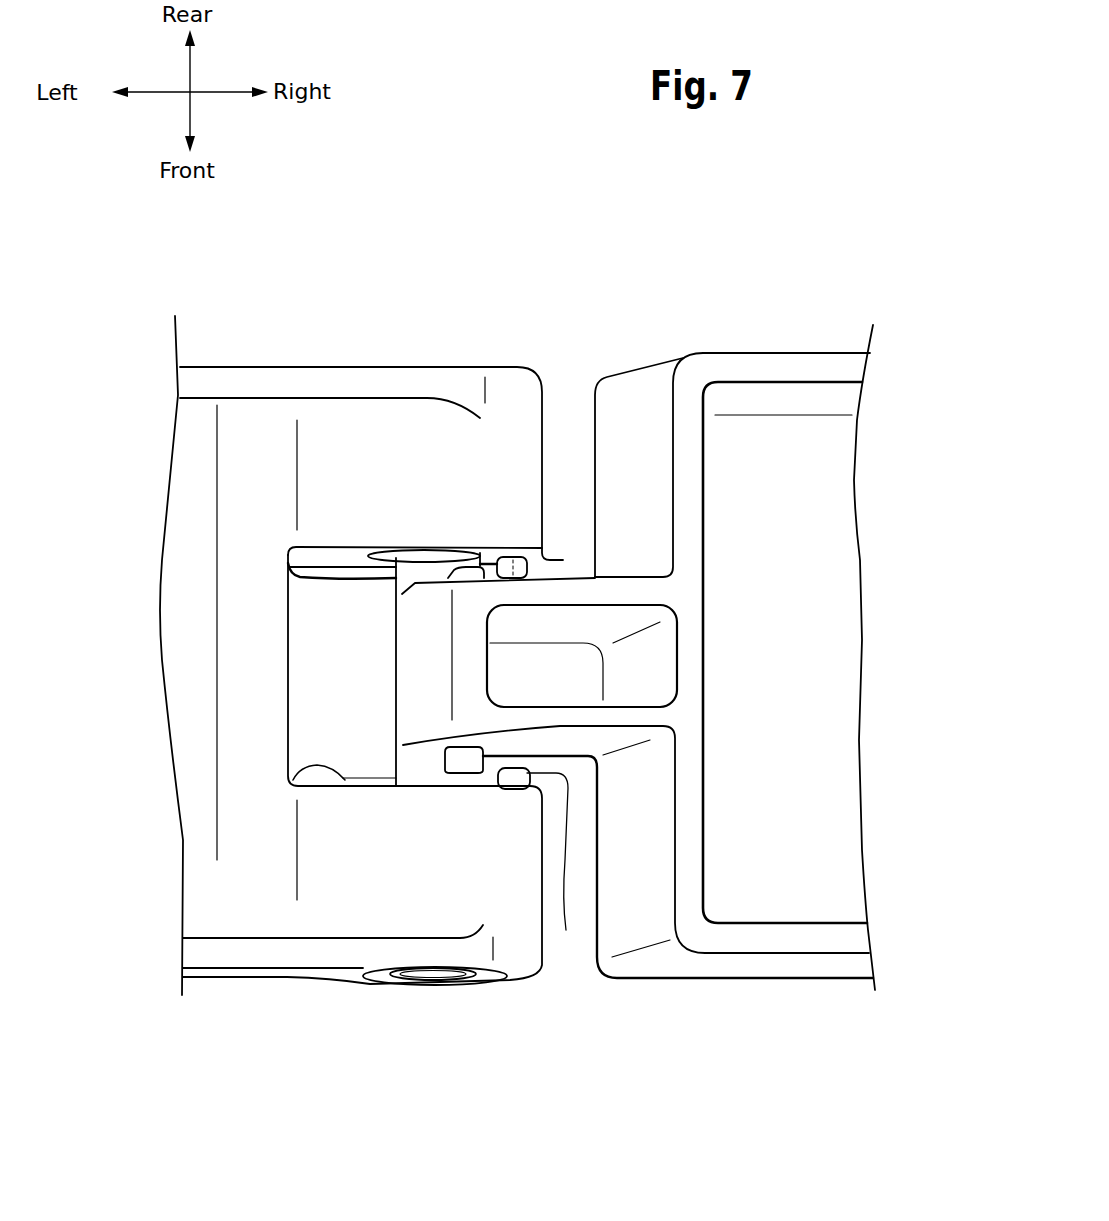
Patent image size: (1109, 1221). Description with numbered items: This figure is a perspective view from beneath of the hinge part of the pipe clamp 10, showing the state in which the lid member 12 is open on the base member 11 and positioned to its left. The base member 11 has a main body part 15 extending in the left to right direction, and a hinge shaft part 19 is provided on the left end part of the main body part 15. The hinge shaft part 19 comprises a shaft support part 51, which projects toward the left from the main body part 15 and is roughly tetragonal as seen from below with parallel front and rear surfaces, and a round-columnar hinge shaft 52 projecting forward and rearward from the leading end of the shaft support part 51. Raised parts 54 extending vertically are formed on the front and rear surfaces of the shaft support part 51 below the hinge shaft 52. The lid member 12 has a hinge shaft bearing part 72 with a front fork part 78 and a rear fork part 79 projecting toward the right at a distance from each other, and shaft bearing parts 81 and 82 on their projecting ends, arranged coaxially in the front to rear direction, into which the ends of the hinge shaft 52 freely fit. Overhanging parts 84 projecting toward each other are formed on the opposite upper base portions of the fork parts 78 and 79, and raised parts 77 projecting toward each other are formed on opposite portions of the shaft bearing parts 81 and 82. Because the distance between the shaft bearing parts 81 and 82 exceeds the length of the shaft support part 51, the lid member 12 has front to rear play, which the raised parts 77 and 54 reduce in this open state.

The pipe clamp 10 is at (497, 168).
The base member 11 is at (671, 264).
The lid member 12 is at (239, 268).
The main body part 15 is at (762, 360).
The hinge shaft part 19 is at (625, 782).
The shaft support part 51 is at (567, 587).
The hinge shaft 52 is at (407, 577).
The raised part 54 is at (475, 553).
The hinge shaft bearing part 72 is at (333, 998).
The raised part 77 is at (563, 560).
The front fork part 78 is at (313, 902).
The rear fork part 79 is at (350, 415).
The shaft bearing part 81 is at (517, 982).
The shaft bearing part 82 is at (517, 382).
The overhanging part 84 is at (347, 577).